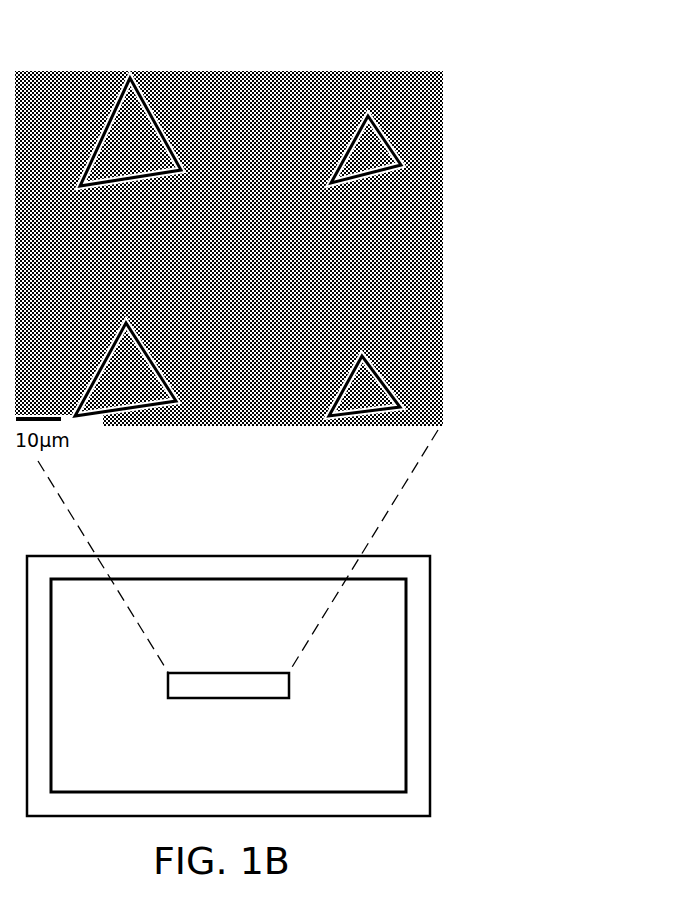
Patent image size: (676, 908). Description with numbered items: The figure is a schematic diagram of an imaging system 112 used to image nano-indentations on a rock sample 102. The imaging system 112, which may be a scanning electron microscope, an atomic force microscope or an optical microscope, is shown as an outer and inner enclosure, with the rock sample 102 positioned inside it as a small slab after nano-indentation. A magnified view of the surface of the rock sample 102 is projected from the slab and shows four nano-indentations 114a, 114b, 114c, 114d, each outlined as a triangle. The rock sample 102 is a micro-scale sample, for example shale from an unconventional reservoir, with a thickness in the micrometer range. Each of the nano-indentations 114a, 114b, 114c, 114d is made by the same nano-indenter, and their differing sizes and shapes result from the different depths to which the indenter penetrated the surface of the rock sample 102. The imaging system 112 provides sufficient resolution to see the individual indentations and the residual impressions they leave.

The rock sample 102 is at (183, 63).
The imaging system 112 is at (247, 544).
The nano-indentation 114a is at (95, 128).
The nano-indentation 114b is at (378, 133).
The nano-indentation 114c is at (120, 402).
The nano-indentation 114d is at (359, 404).